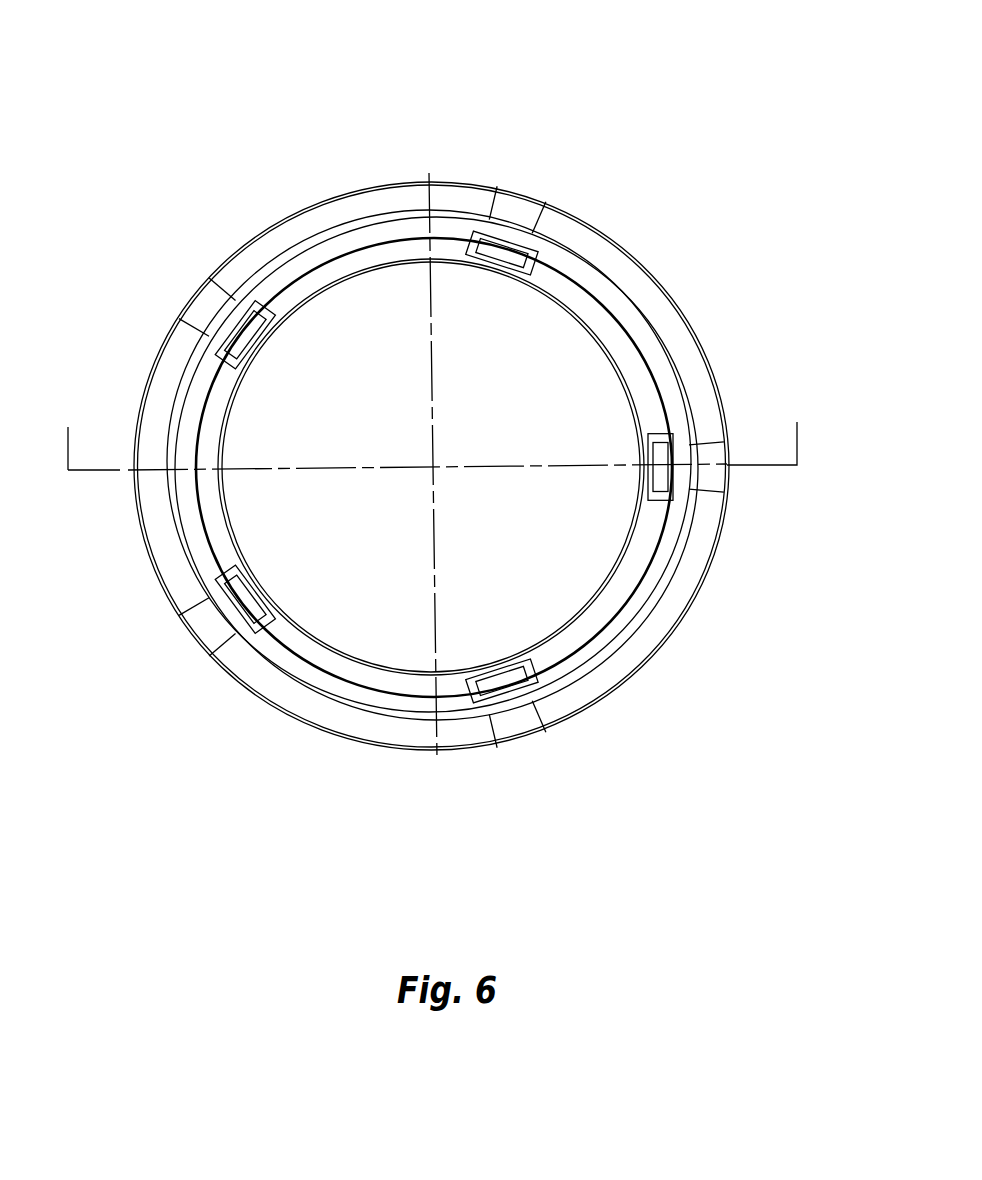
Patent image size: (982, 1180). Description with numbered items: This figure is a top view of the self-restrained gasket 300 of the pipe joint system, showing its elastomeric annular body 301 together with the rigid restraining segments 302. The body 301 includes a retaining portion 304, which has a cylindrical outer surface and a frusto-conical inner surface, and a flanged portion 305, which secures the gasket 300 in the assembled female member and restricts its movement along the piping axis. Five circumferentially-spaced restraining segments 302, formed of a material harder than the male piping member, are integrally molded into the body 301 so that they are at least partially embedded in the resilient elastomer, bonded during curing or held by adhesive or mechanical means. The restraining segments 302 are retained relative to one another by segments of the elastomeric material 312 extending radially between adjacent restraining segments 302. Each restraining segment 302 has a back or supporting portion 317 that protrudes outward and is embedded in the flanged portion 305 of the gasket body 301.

The self-restrained gasket 300 is at (768, 81).
The annular body 301 is at (627, 650).
The restraining segments 302 is at (490, 255).
The retaining portion 304 is at (660, 354).
The flanged portion 305 is at (163, 377).
The segments of the elastomeric material 312 is at (328, 268).
The supporting portion 317 is at (540, 201).